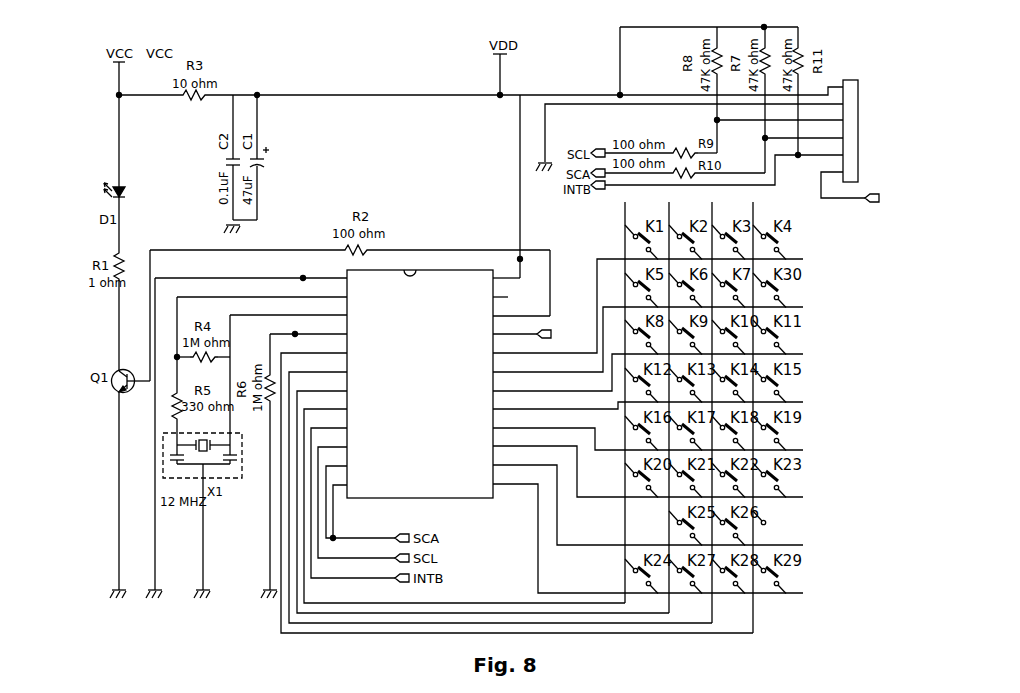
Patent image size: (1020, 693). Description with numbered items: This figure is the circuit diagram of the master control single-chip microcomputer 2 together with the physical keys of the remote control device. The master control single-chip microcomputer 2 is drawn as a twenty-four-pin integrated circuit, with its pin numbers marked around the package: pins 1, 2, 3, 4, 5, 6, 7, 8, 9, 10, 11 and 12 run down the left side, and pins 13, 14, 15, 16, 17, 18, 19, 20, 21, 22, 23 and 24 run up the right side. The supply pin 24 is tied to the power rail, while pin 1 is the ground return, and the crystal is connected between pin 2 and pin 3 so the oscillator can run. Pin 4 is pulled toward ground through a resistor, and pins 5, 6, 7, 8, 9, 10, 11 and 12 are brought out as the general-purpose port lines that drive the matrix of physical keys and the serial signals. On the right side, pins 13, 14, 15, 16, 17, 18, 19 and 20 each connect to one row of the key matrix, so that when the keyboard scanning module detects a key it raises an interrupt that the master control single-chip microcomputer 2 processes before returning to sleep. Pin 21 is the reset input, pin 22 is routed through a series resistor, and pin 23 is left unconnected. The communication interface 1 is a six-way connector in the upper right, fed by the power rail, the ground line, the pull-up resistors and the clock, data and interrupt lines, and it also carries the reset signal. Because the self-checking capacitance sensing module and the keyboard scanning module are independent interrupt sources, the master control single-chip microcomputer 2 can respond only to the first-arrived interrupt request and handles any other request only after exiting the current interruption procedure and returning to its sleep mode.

The communication interface 1 is at (871, 100).
The master control single-chip microcomputer 2 is at (334, 275).
The XIN pin of U1 3 is at (288, 309).
The ISPEL pin of U1 4 is at (308, 329).
The FAO pin of U1 5 is at (517, 486).
The MSO/PA1 pin of U1 6 is at (500, 491).
The FA2 pin of U1 7 is at (483, 495).
The FA3 pin of U1 8 is at (464, 499).
The FA4 pin of U1 9 is at (353, 496).
The FA5 pin of U1 10 is at (356, 496).
The PA6 pin of U1 11 is at (360, 495).
The PA7 pin of U1 12 is at (338, 506).
The PBO/RXDC/ISPSCK pin of U1 13 is at (648, 532).
The PB1/TXDO/MOSI pin of U1 14 is at (648, 499).
The PB2/RXD1 pin of U1 15 is at (648, 465).
The PB3/RXD1 pin of U1 16 is at (648, 432).
The PB4 pin of U1 17 is at (648, 402).
The PB5 pin of U1 18 is at (648, 372).
The PB6/T2EX pin of U1 19 is at (648, 339).
The PB7 pin of U1 20 is at (648, 306).
The PCC/TO/ISPSS pin of U1 21 is at (545, 331).
The PC1/REM/TI pin of U1 22 is at (521, 309).
The PC2/T2 pin of U1 23 is at (502, 290).
The VDD pin of U1 24 is at (506, 271).